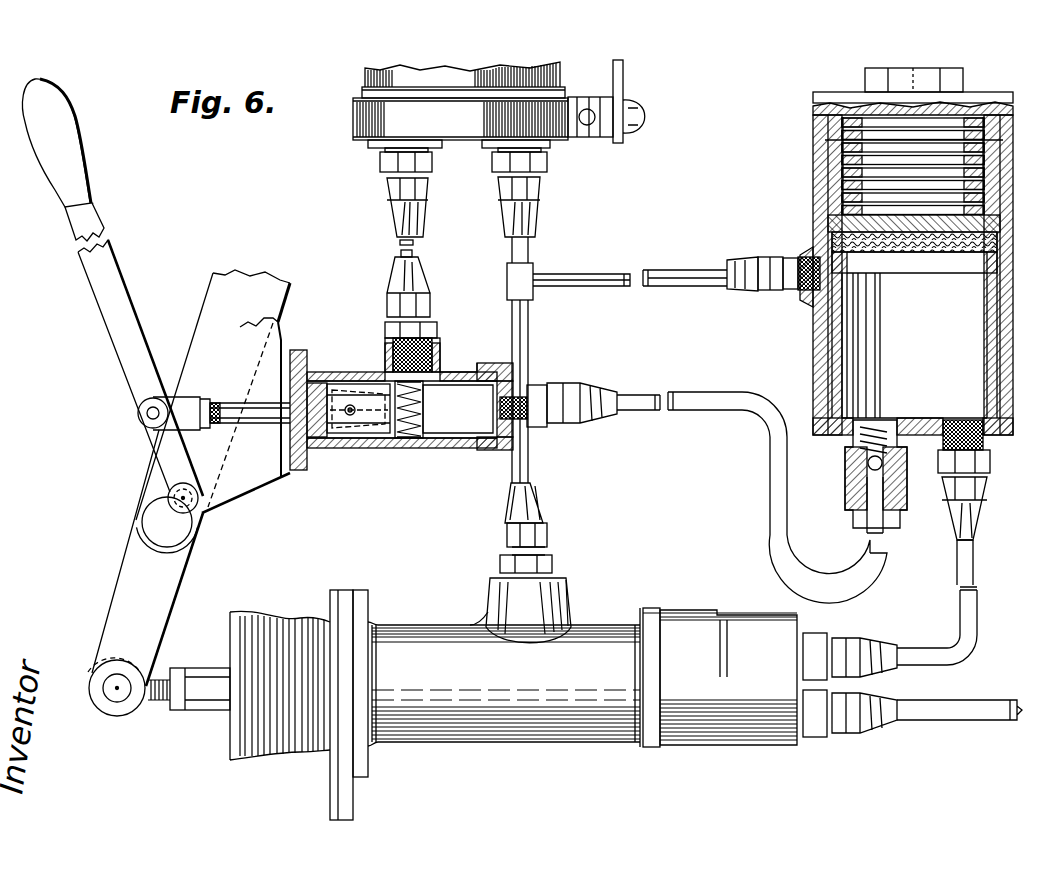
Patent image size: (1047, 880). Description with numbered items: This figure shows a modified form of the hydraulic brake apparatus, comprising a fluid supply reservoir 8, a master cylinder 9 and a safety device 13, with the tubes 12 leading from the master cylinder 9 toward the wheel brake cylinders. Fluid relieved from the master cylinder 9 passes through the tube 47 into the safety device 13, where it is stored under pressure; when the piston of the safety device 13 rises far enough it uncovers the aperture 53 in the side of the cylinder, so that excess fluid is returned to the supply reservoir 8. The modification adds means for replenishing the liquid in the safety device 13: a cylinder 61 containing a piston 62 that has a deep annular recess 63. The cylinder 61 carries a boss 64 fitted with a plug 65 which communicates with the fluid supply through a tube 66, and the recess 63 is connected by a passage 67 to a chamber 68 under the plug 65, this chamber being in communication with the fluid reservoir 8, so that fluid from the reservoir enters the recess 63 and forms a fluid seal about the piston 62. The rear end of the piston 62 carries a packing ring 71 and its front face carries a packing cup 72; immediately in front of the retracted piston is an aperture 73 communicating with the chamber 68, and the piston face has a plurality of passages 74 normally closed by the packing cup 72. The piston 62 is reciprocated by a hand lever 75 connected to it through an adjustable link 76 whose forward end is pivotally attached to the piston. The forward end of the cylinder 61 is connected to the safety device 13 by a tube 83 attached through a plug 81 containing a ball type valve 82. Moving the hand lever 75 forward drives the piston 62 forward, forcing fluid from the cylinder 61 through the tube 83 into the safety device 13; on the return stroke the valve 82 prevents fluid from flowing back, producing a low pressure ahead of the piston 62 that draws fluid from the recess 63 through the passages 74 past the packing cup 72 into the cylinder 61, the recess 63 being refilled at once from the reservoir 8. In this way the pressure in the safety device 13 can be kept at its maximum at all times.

The fluid supply reservoir 8 is at (558, 130).
The master cylinder 9 is at (425, 632).
The tubes 12 is at (923, 712).
The safety device 13 is at (817, 353).
The tube 47 is at (960, 615).
The aperture 53 is at (827, 267).
The cylinder 61 is at (362, 370).
The piston 62 is at (320, 440).
The annular recess 63 is at (370, 440).
The boss 64 is at (433, 360).
The plug 65 is at (428, 282).
The tube 66 is at (417, 253).
The passage 67 is at (380, 373).
The chamber 68 is at (437, 368).
The packing ring 71 is at (395, 463).
The packing cup 72 is at (423, 440).
The aperture 73 is at (432, 383).
The passages 74 is at (395, 378).
The hand lever 75 is at (73, 150).
The adjustable link 76 is at (253, 417).
The plug 81 is at (847, 477).
The valve 82 is at (850, 458).
The tube 83 is at (723, 378).